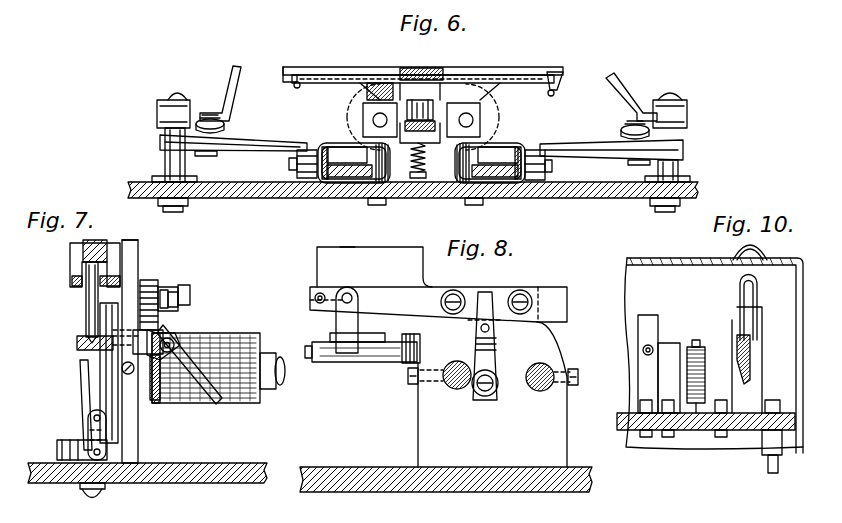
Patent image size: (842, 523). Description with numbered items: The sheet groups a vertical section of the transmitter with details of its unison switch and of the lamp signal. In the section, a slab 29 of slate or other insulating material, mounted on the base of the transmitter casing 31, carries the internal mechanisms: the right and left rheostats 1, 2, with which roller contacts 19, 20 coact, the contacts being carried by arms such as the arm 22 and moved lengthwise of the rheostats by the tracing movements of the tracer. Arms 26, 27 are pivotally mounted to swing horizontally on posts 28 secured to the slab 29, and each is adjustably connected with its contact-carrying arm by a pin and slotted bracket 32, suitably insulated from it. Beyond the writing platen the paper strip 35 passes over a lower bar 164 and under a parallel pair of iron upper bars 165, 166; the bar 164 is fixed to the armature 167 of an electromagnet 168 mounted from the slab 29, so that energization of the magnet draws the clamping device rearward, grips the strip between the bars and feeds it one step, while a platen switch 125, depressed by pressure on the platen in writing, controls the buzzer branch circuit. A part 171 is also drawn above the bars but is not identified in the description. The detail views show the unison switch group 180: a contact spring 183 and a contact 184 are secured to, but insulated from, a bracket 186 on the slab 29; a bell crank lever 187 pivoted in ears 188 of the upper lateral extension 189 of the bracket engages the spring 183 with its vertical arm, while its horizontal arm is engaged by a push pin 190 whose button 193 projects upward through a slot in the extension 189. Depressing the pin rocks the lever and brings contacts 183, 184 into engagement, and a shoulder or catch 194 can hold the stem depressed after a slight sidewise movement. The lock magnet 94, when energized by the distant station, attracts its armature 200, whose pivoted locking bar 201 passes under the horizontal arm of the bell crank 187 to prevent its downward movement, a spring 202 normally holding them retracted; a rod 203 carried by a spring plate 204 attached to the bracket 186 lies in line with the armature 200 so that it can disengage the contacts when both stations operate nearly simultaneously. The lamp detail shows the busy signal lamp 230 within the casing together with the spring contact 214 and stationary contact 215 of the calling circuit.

In FIG. 6, the rheostat 1 is at (505, 148).
In FIG. 6, the left rheostat 2 is at (333, 143).
In FIG. 6, the roller contact 19 is at (548, 171).
In FIG. 6, the roller contact 20 is at (289, 164).
In FIG. 6, the arm 22 is at (272, 142).
In FIG. 6, the arm 26 is at (624, 100).
In FIG. 6, the arm 27 is at (228, 76).
In FIG. 6, the post 28 is at (165, 162).
In FIG. 6, the slab 29 is at (603, 196).
In FIG. 7, the slab 29 is at (210, 457).
In FIG. 8, the slab 29 is at (513, 471).
In FIG. 10, the slab 29 is at (700, 430).
In FIG. 10, the transmitter casing 31 is at (692, 260).
In FIG. 6, the pin and slotted bracket 32 is at (230, 113).
In FIG. 6, the paper record strip 35 is at (552, 72).
In FIG. 7, the lock magnet 94 is at (240, 333).
In FIG. 6, the platen switch 125 is at (428, 150).
In FIG. 6, the lower bar 164 is at (535, 90).
In FIG. 6, the upper bar 165 is at (358, 62).
In FIG. 6, the upper bar 166 is at (505, 75).
In FIG. 6, the armature 167 is at (483, 108).
In FIG. 6, the electromagnet 168 is at (350, 100).
In FIG. 6, the block 171 is at (440, 64).
In FIG. 7, the unison switch group 180 is at (183, 305).
In FIG. 7, the contact spring 183 is at (180, 290).
In FIG. 8, the contact spring 183 is at (317, 296).
In FIG. 7, the contact 184 is at (168, 290).
In FIG. 7, the bracket 186 is at (138, 437).
In FIG. 8, the bracket 186 is at (493, 394).
In FIG. 7, the bell crank lever 187 is at (77, 342).
In FIG. 8, the bell crank lever 187 is at (358, 320).
In FIG. 7, the ears 188 is at (192, 395).
In FIG. 8, the ears 188 is at (417, 340).
In FIG. 7, the upper lateral extension 189 is at (138, 252).
In FIG. 8, the upper lateral extension 189 is at (374, 267).
In FIG. 7, the push pin 190 is at (86, 318).
In FIG. 7, the button 193 is at (105, 243).
In FIG. 8, the button 193 is at (360, 243).
In FIG. 7, the shoulder or catch 194 is at (78, 272).
In FIG. 7, the armature 200 is at (106, 400).
In FIG. 7, the locking bar 201 is at (100, 370).
In FIG. 7, the spring 202 is at (80, 440).
In FIG. 7, the rod 203 is at (92, 310).
In FIG. 8, the rod 203 is at (481, 329).
In FIG. 7, the spring plate 204 is at (170, 320).
In FIG. 8, the spring plate 204 is at (493, 330).
In FIG. 10, the spring contact 214 is at (638, 338).
In FIG. 10, the stationary contact 215 is at (656, 350).
In FIG. 10, the lamp 230 is at (740, 293).